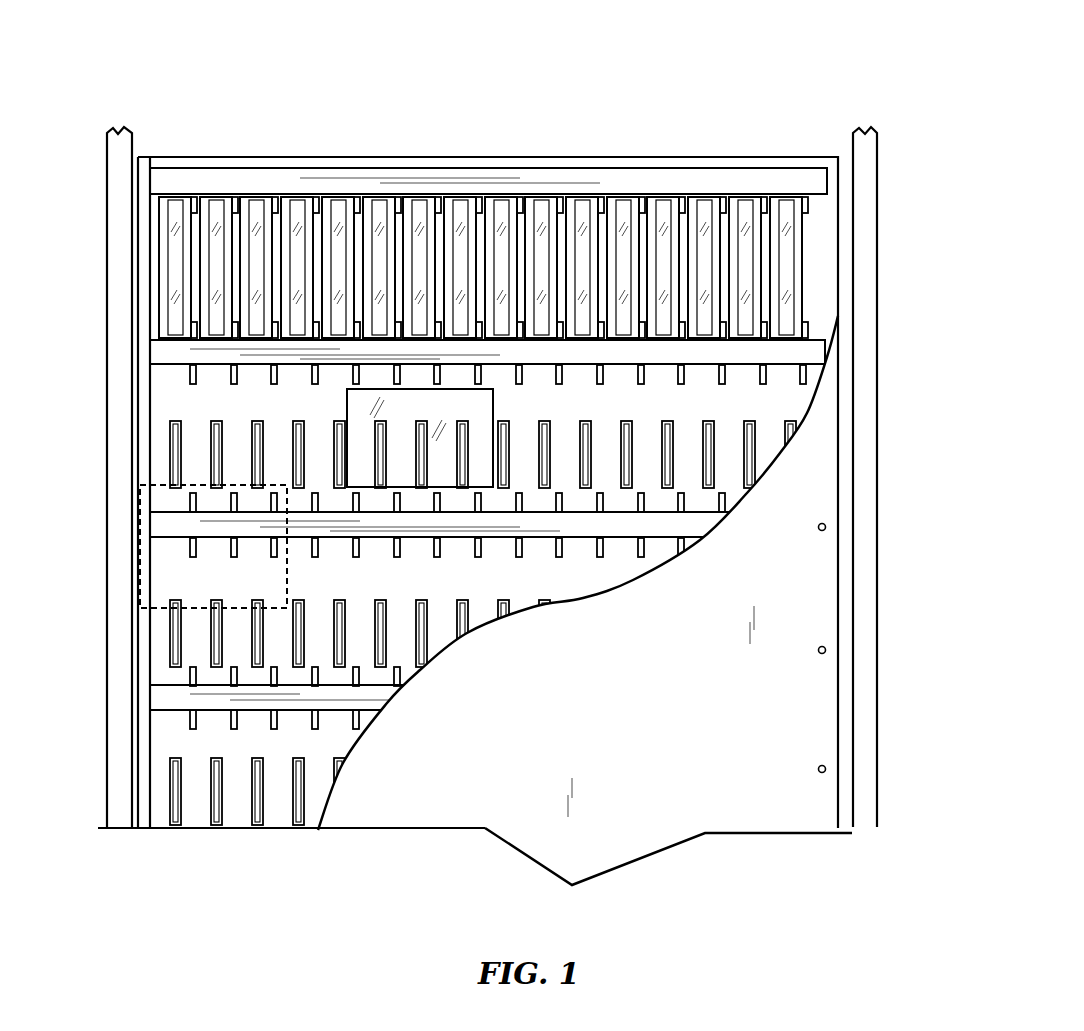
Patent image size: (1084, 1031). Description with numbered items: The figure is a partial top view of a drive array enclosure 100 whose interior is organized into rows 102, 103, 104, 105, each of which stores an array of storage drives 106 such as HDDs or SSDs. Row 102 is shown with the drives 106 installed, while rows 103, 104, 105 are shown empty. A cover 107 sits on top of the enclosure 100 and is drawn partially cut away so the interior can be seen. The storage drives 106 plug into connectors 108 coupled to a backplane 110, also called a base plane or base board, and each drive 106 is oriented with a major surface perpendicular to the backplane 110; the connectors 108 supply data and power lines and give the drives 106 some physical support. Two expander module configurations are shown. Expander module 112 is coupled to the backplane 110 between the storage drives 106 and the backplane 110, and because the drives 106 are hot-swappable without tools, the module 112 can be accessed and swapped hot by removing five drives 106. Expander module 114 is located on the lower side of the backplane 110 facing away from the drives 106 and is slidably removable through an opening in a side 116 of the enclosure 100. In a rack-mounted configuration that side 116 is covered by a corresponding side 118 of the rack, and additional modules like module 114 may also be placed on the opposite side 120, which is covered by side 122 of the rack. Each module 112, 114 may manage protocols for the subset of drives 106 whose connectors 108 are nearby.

The drive array enclosure 100 is at (490, 84).
The row 102 is at (558, 224).
The row 103 is at (510, 446).
The row 104 is at (893, 540).
The row 105 is at (893, 712).
The storage drives 106 is at (257, 207).
The cover 107 is at (713, 817).
The connectors 108 is at (255, 428).
The backplane 110 is at (158, 792).
The expander module 112 is at (488, 405).
The expander module 114 is at (150, 496).
The side of the enclosure 116 is at (137, 636).
The side of the rack 118 is at (127, 137).
The opposite side of the enclosure 120 is at (840, 170).
The side of the rack 122 is at (868, 135).